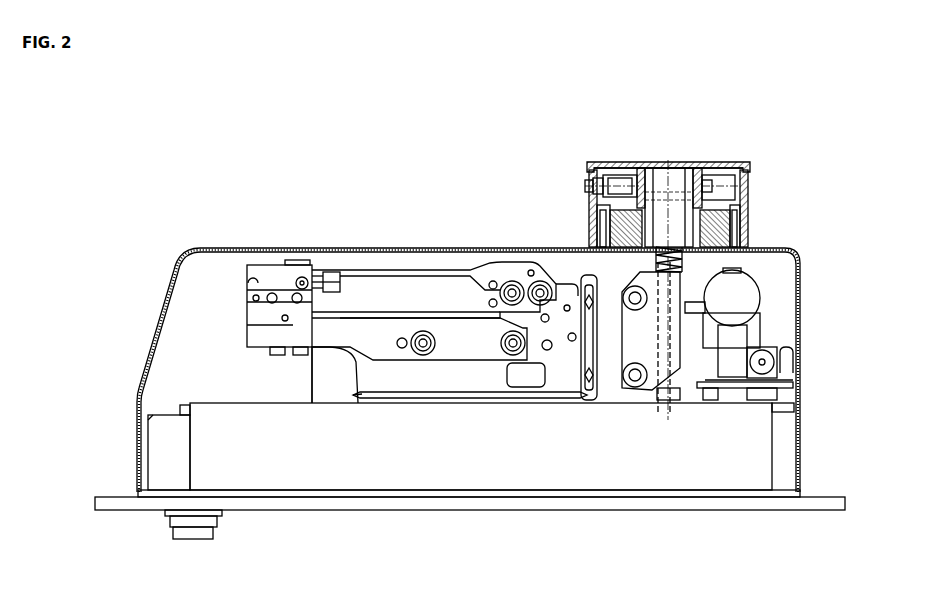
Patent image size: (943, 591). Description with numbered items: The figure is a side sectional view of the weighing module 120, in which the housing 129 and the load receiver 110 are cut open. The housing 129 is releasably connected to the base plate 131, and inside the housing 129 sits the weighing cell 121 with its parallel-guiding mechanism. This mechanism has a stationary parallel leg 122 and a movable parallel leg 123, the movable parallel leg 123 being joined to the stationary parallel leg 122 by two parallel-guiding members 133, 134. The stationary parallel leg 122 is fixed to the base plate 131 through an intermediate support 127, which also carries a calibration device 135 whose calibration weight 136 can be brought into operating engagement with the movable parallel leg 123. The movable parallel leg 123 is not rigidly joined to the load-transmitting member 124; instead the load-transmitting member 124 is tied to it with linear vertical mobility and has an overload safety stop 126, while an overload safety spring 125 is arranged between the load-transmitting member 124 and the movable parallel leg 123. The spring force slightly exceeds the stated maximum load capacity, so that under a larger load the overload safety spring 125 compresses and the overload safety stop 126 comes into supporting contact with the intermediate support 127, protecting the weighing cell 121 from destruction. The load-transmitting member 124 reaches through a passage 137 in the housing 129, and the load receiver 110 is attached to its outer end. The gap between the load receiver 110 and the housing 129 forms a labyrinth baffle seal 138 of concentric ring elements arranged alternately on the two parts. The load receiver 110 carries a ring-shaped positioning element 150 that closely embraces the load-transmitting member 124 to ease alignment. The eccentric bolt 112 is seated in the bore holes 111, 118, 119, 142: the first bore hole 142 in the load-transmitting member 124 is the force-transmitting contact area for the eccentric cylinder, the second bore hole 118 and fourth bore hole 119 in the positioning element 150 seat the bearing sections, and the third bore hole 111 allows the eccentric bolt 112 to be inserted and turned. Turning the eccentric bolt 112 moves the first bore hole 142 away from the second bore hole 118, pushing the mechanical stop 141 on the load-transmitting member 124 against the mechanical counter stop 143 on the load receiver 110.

The load receiver 110 is at (748, 164).
The third bore hole 111 is at (590, 163).
The eccentric bolt 112 is at (617, 180).
The second bore hole 118 is at (641, 178).
The fourth bore hole 119 is at (713, 172).
The weighing module 120 is at (390, 234).
The weighing cell 121 is at (234, 306).
The stationary parallel leg 122 is at (330, 372).
The movable parallel leg 123 is at (592, 385).
The load-transmitting member 124 is at (685, 205).
The overload safety spring 125 is at (690, 258).
The overload safety stop 126 is at (667, 392).
The intermediate support 127 is at (541, 449).
The housing 129 is at (232, 247).
The base plate 131 is at (722, 503).
The parallel-guiding member 133 is at (452, 272).
The parallel-guiding member 134 is at (465, 395).
The calibration device 135 is at (772, 323).
The calibration weight 136 is at (742, 294).
The passage 137 is at (738, 213).
The labyrinth baffle seal 138 is at (762, 228).
The mechanical stop 141 is at (663, 160).
The first bore hole 142 is at (683, 183).
The mechanical counter stop 143 is at (655, 176).
The positioning element 150 is at (752, 163).